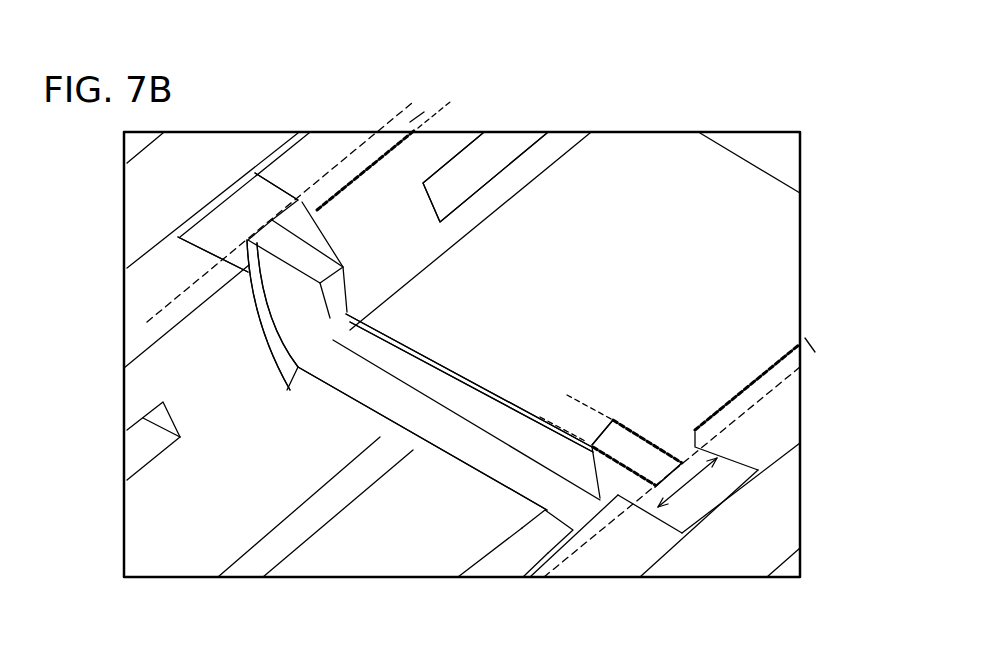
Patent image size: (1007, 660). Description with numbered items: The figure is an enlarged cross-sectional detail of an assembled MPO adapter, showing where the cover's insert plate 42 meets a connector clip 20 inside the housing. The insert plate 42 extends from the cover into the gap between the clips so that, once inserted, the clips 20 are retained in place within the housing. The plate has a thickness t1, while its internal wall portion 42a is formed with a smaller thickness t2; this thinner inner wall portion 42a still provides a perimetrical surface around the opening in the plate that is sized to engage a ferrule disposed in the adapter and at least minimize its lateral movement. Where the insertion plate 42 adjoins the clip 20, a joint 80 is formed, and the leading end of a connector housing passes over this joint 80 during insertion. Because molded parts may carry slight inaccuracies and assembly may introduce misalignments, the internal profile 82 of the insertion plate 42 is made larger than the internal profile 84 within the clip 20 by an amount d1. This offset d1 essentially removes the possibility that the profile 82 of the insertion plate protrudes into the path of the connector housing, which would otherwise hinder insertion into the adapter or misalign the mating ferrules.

The connector clip 20 is at (170, 248).
The insert plate 42 is at (247, 208).
The inner wall portion 42a is at (337, 300).
The joint 80 is at (377, 423).
The internal profile of the insertion plate 82 is at (420, 478).
The internal profile within a clip 84 is at (413, 506).
The offset amount d1 is at (420, 112).
The thickness of the plate t1 is at (690, 483).
The thickness of the inner wall portion t2 is at (562, 408).